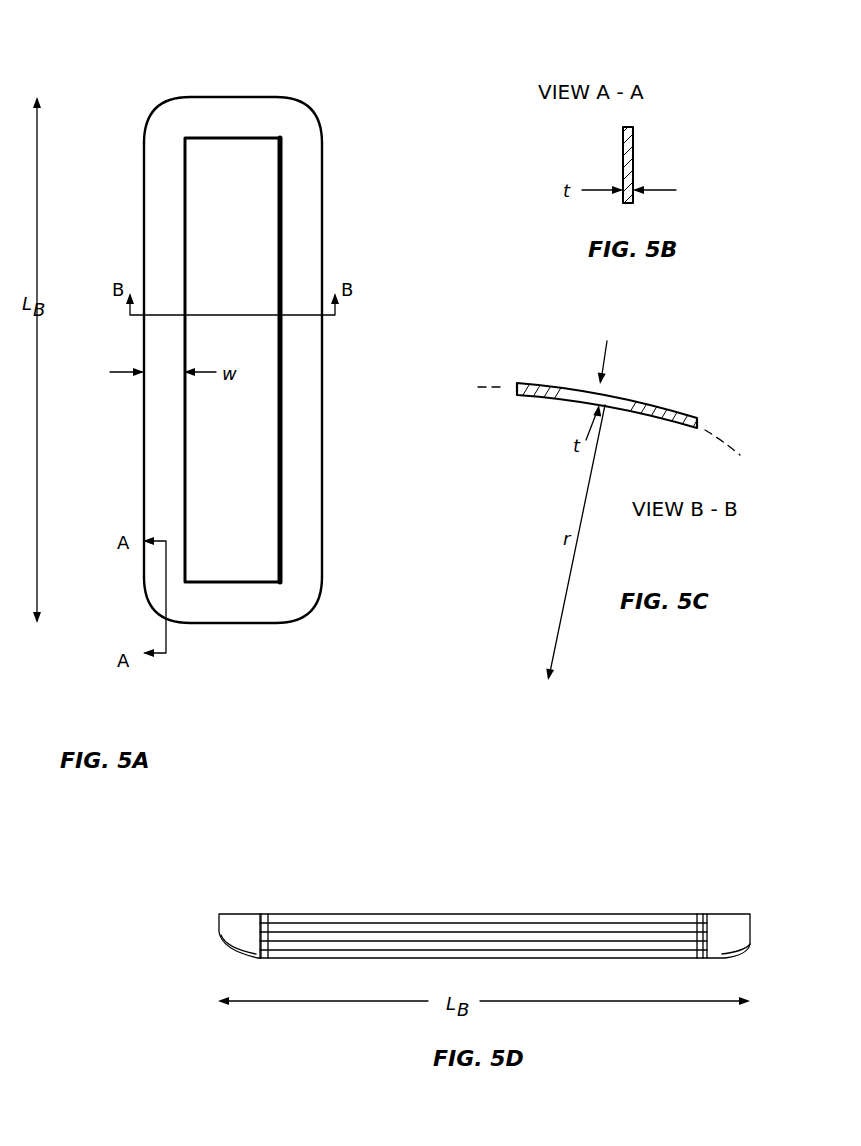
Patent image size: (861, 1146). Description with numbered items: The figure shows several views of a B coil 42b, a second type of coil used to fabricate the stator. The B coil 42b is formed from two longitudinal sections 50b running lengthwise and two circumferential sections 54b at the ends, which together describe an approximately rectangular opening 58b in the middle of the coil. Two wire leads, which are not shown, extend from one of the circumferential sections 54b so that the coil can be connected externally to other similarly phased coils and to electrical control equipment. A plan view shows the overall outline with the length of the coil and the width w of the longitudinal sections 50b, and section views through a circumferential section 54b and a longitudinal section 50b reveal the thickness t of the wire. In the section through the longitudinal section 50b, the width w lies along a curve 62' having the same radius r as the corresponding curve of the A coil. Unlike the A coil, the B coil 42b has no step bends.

In FIG. 5A, the B coil 42b is at (412, 261).
In FIG. 5D, the B coil 42b is at (595, 850).
In FIG. 5A, the longitudinal sections 50b is at (118, 172).
In FIG. 5D, the longitudinal sections 50b is at (380, 917).
In FIG. 5A, the circumferential sections 54b is at (322, 67).
In FIG. 5C, the circumferential sections 54b is at (638, 394).
In FIG. 5D, the circumferential sections 54b is at (220, 932).
In FIG. 5A, the rectangular opening 58b is at (243, 534).
In FIG. 5C, the curve 62' is at (641, 421).